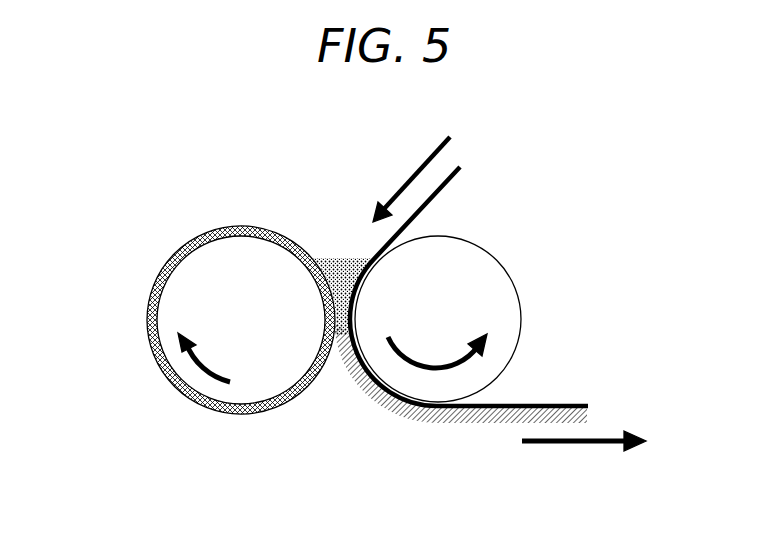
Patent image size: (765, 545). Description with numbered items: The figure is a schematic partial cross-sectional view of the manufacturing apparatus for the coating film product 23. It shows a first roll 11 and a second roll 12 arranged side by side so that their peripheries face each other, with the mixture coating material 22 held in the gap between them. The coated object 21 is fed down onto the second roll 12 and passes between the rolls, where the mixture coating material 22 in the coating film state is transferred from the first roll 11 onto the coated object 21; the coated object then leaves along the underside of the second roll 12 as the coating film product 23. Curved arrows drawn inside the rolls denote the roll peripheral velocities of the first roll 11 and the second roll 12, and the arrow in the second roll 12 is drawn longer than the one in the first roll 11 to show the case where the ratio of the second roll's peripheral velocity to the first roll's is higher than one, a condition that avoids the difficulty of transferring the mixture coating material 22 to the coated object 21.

The first roll 11 is at (198, 273).
The second roll 12 is at (457, 280).
The coated object 21 is at (460, 155).
The mixture coating material 22 is at (340, 252).
The coating film product 23 is at (448, 417).